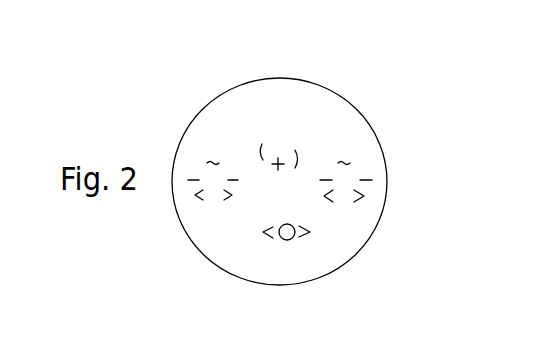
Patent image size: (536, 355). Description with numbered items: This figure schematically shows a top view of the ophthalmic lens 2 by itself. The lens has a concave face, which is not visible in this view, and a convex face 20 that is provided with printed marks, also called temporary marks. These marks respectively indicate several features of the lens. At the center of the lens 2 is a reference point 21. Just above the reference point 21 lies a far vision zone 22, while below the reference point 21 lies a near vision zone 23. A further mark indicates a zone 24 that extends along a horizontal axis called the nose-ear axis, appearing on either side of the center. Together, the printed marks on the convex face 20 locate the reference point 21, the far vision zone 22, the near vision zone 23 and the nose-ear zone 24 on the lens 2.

The ophthalmic lens 2 is at (293, 156).
The convex face 20 is at (280, 100).
The reference point 21 is at (282, 178).
The far vision zone 22 is at (259, 143).
The near vision zone 23 is at (265, 240).
The zone extending along the nose-ear axis 24 is at (186, 153).